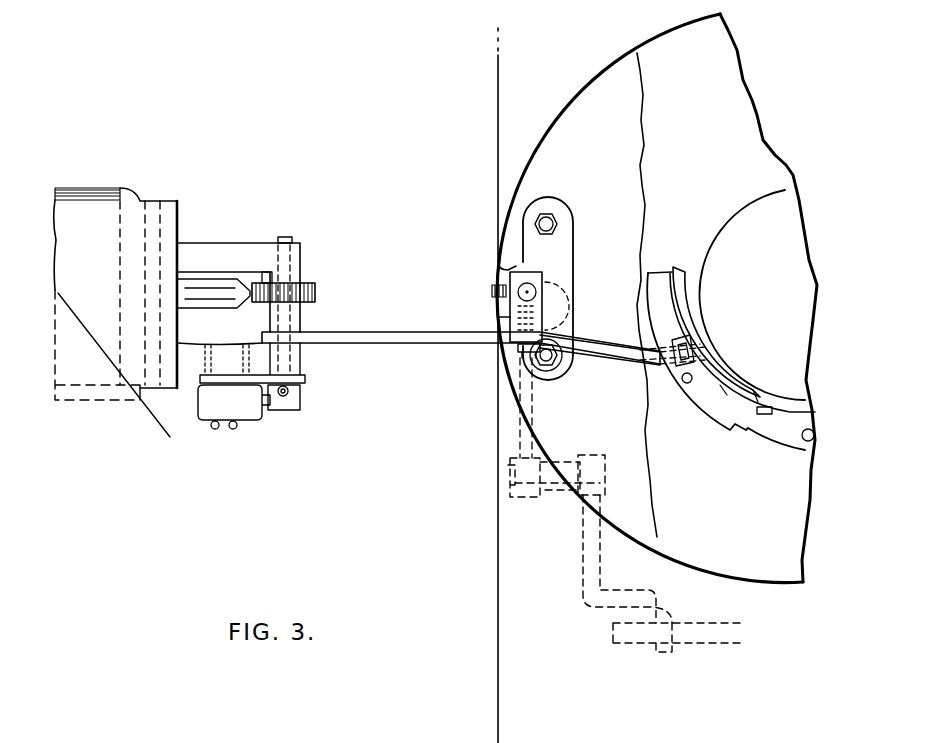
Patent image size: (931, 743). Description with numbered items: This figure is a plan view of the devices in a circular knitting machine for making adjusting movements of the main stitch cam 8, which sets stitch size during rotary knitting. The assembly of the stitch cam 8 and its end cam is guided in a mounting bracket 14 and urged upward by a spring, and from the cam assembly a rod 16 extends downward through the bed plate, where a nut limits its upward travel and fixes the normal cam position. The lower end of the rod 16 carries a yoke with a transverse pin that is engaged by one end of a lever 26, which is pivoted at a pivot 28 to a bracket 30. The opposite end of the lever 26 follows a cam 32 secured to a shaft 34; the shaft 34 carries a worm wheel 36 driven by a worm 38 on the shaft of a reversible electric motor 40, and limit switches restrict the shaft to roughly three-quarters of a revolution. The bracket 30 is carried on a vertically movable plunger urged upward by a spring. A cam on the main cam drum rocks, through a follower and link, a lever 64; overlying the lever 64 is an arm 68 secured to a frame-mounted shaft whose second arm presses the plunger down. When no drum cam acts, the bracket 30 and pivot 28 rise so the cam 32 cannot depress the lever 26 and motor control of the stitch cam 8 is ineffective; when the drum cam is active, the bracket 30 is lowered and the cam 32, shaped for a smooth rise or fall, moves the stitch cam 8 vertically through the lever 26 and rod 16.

The main stitch cam 8 is at (692, 303).
The mounting bracket 14 is at (708, 403).
The rod 16 is at (683, 363).
The lever 26 is at (598, 348).
The pivot 28 is at (527, 352).
The bracket 30 is at (510, 308).
The cam 32 is at (320, 335).
The shaft 34 is at (291, 240).
The worm wheel 36 is at (316, 293).
The worm 38 is at (266, 272).
The reversible electric motor 40 is at (95, 398).
The lever 64 is at (695, 624).
The arm 68 is at (625, 592).